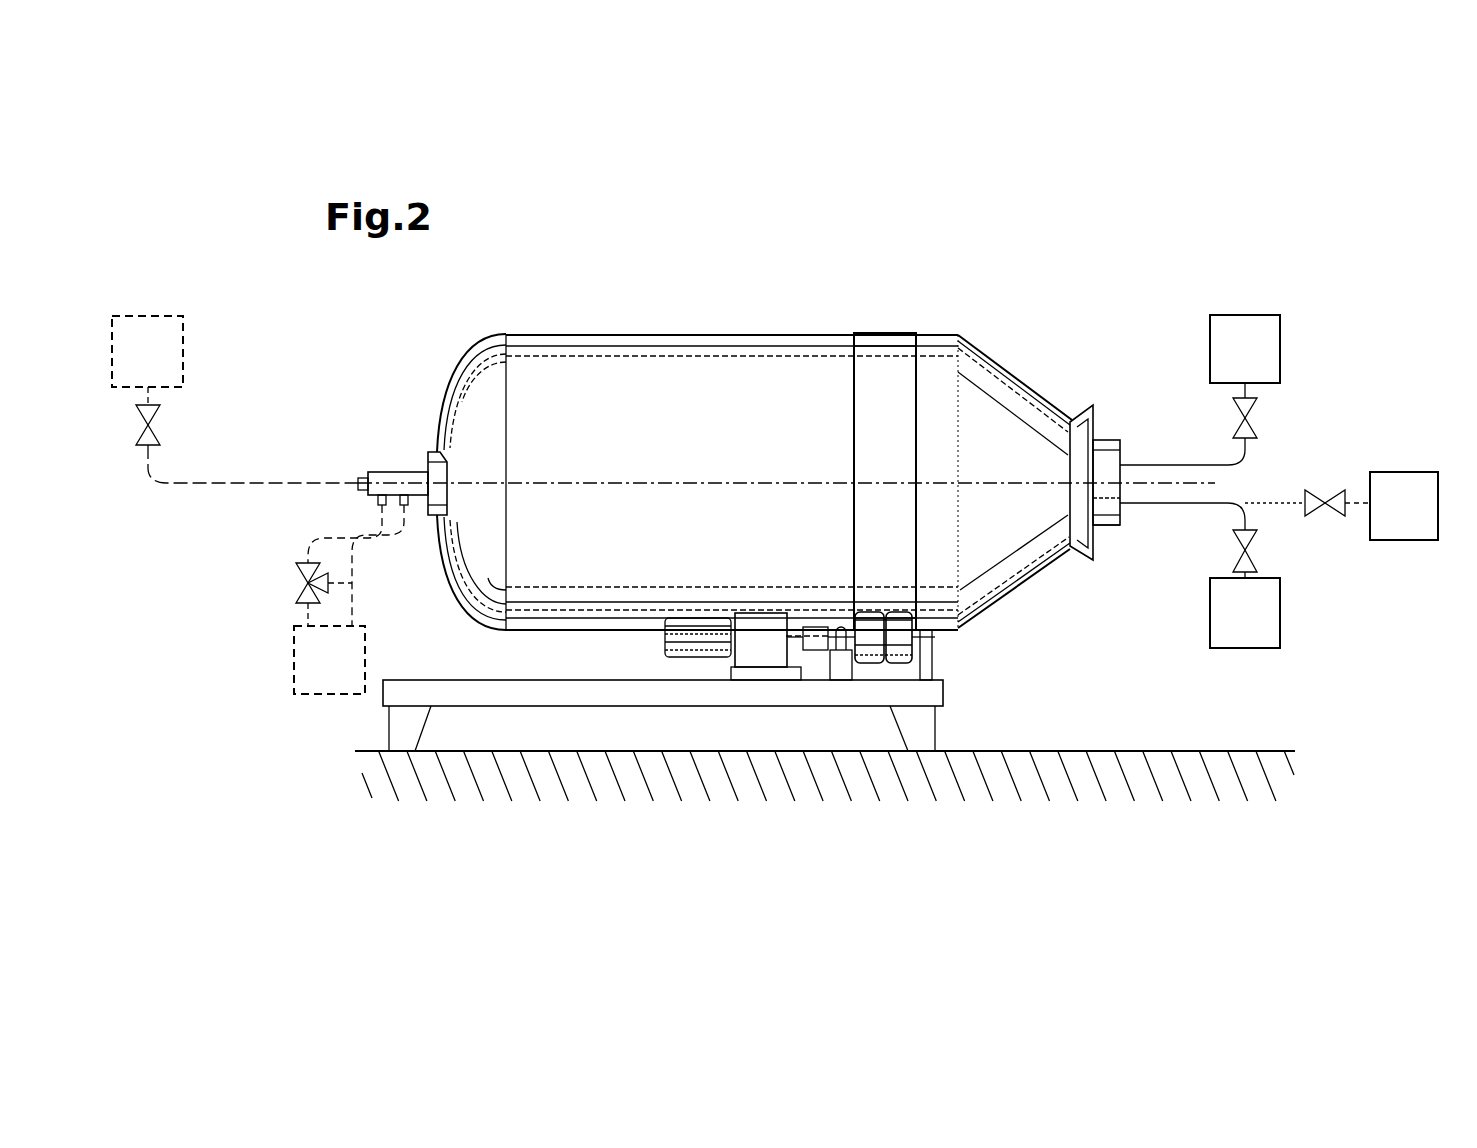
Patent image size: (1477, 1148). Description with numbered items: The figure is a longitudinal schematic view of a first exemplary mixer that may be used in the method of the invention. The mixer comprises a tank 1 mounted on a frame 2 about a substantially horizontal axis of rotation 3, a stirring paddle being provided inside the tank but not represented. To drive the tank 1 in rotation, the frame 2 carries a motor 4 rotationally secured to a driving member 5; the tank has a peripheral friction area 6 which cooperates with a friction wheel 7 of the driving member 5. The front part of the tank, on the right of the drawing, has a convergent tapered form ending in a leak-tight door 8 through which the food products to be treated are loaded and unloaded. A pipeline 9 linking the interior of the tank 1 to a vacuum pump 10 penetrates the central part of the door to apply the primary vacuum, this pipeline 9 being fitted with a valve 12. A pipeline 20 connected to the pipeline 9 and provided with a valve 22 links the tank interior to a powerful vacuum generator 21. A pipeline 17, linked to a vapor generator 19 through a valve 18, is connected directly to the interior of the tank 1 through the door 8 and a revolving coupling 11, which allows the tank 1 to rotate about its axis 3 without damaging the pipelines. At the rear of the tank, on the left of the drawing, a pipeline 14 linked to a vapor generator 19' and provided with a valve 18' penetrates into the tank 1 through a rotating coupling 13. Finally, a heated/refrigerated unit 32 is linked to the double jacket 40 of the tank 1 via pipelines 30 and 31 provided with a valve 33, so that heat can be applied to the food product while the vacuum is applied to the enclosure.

The tank 1 is at (935, 348).
The frame 2 is at (470, 690).
The axis of rotation 3 is at (540, 483).
The motor 4 is at (762, 680).
The driving member 5 is at (900, 664).
The peripheral friction area 6 is at (884, 337).
The friction wheel 7 is at (872, 680).
The leak-tight door 8 is at (1110, 438).
The pipeline 9 is at (1182, 503).
The vacuum pump 10 is at (1280, 620).
The revolving coupling 11 is at (1118, 525).
The valve 12 is at (1257, 550).
The rotating coupling 13 is at (424, 515).
The pipeline 14 is at (172, 490).
The pipeline 17 is at (1165, 465).
The valve 18 is at (1272, 417).
The vapor generator 19 is at (1280, 346).
The valve 18' is at (179, 417).
The vapor generator 19' is at (184, 351).
The pipeline 20 is at (1262, 503).
The powerful vacuum generator 21 is at (1420, 472).
The valve 22 is at (1325, 490).
The pipeline 30 is at (312, 538).
The pipeline 31 is at (352, 583).
The heated/refrigerated unit 32 is at (322, 694).
The valve 33 is at (296, 583).
The double jacket 40 is at (676, 334).